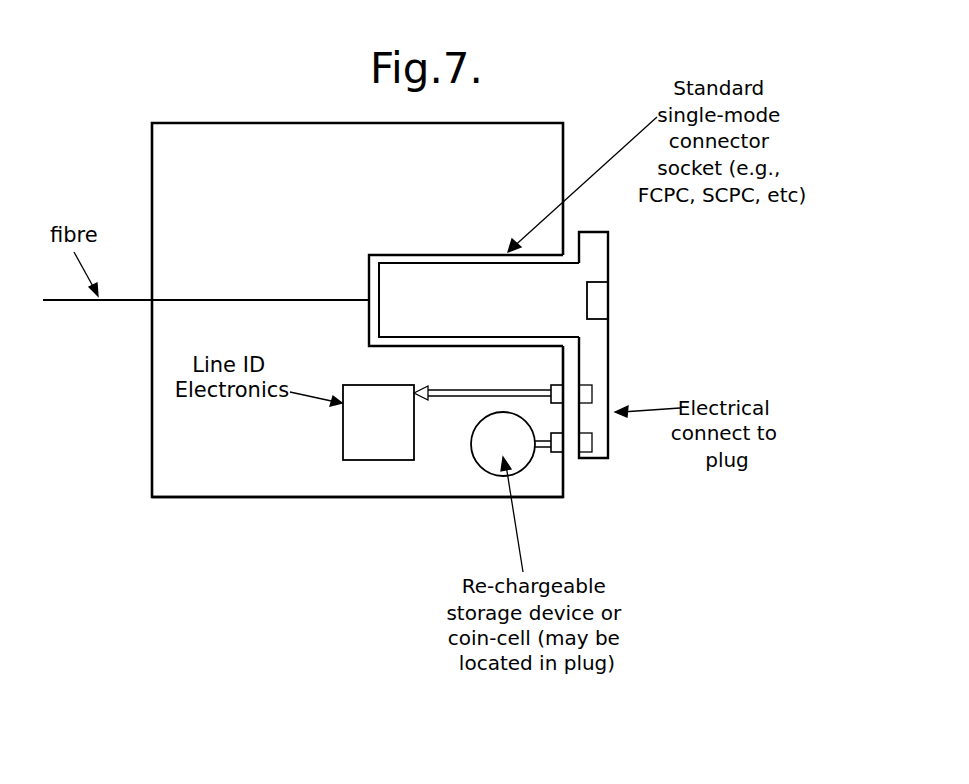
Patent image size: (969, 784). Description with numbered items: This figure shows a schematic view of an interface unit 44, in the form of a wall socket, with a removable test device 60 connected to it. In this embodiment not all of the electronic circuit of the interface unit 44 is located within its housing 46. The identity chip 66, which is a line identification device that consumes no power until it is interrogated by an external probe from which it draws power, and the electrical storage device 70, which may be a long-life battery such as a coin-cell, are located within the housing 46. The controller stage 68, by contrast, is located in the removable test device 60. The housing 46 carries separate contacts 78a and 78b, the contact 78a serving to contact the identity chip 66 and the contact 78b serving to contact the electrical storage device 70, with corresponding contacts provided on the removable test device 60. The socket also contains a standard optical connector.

The interface unit 44 is at (522, 123).
The housing 46 is at (220, 497).
The removable test device 60 is at (610, 345).
The identity chip 66 is at (355, 452).
The controller stage 68 is at (600, 303).
The electrical storage device 70 is at (473, 443).
The contact 78a is at (552, 386).
The contact 78b is at (563, 451).